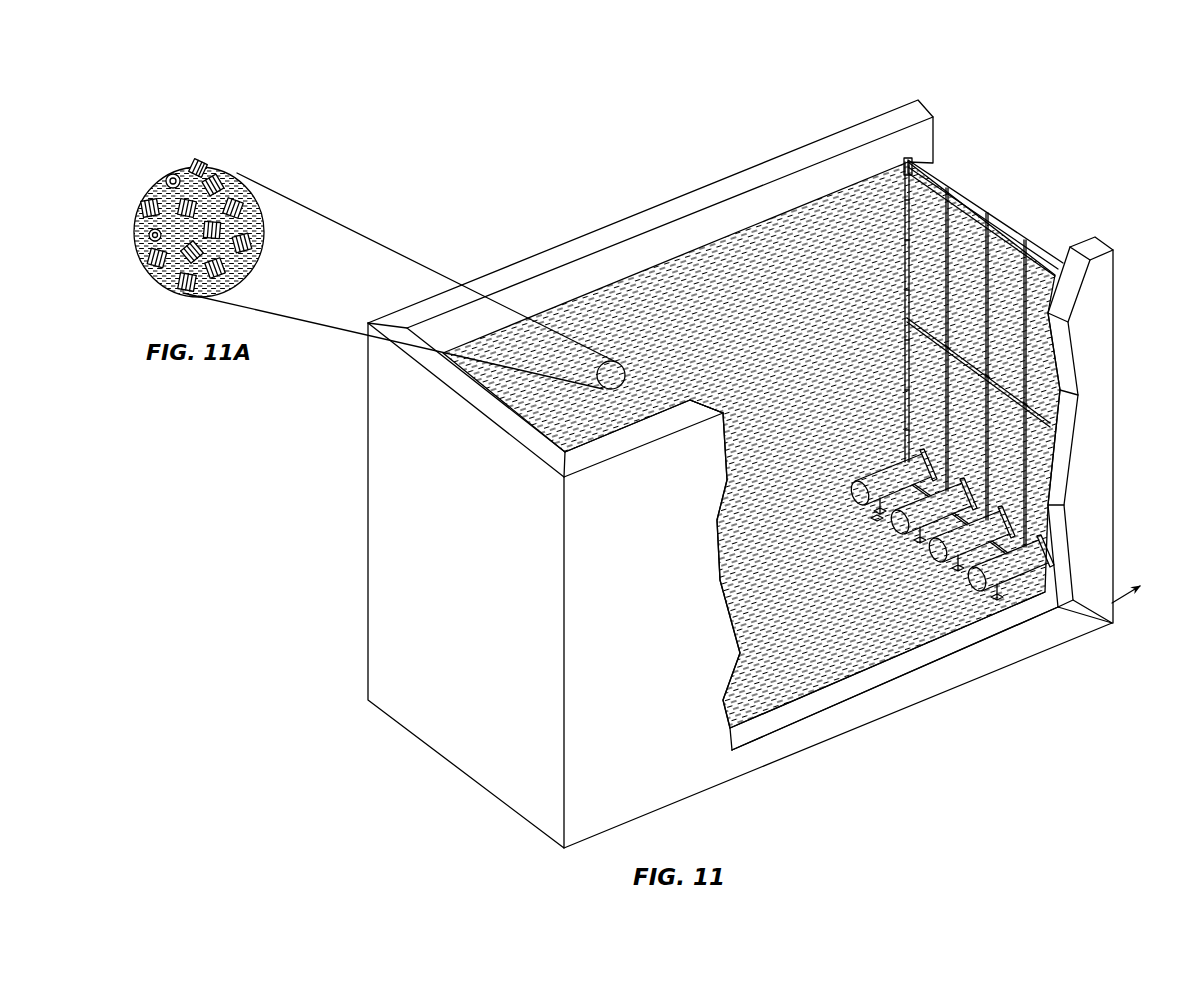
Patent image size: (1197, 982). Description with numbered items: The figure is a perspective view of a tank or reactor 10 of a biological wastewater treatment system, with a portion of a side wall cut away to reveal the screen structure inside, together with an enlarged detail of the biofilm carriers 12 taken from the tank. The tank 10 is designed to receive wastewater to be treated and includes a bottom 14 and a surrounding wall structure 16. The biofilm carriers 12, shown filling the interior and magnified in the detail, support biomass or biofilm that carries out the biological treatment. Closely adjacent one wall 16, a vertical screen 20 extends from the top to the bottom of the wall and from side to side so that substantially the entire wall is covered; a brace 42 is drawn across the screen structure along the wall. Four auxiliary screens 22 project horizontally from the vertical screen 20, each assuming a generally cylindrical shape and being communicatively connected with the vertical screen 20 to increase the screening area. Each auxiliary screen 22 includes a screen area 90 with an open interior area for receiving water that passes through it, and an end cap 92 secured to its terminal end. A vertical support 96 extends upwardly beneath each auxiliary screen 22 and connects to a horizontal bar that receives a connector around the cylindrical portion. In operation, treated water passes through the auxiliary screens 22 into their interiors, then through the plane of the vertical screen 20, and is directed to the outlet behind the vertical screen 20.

In FIG. 11, the tank or reactor 10 is at (1017, 138).
In FIG. 11, the biofilm carriers 12 is at (660, 284).
In FIG. 11A, the biofilm carriers 12 is at (133, 187).
In FIG. 11, the bottom 14 is at (894, 671).
In FIG. 11, the surrounding wall structure 16 is at (763, 168).
In FIG. 11, the vertical screen 20 is at (905, 297).
In FIG. 11, the auxiliary screens 22 is at (866, 522).
In FIG. 11, the brace 42 is at (1033, 357).
In FIG. 11, the screen area 90 is at (1018, 563).
In FIG. 11, the end cap 92 is at (977, 583).
In FIG. 11, the vertical support 96 is at (990, 605).